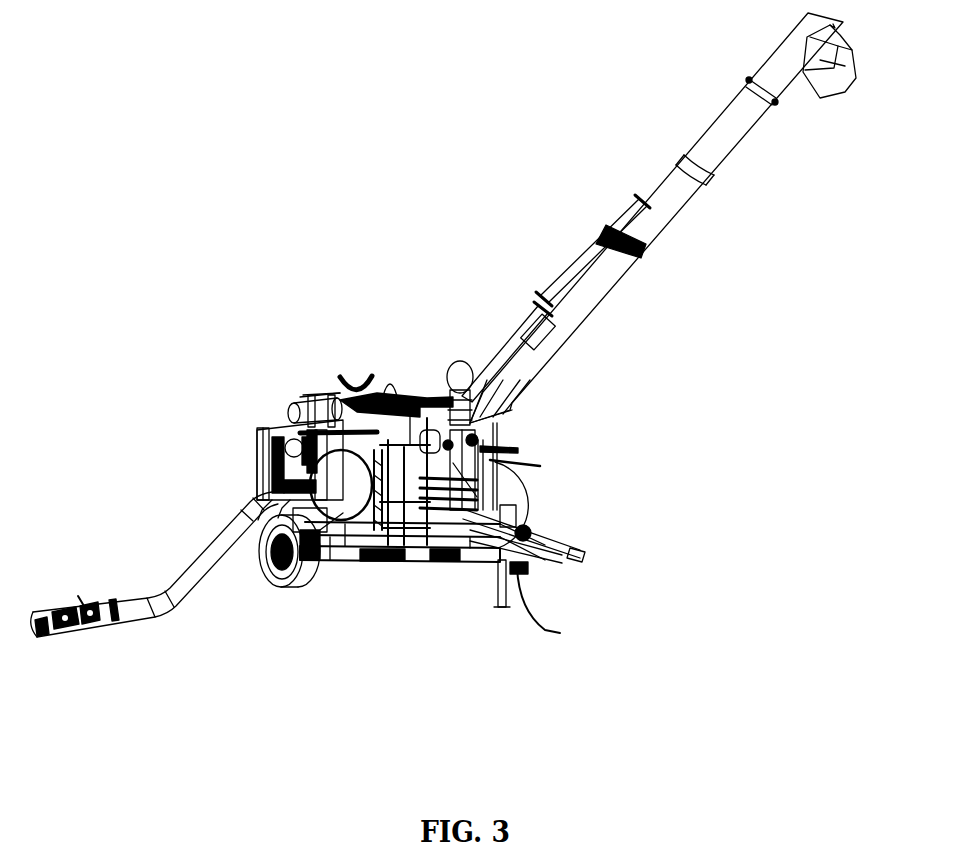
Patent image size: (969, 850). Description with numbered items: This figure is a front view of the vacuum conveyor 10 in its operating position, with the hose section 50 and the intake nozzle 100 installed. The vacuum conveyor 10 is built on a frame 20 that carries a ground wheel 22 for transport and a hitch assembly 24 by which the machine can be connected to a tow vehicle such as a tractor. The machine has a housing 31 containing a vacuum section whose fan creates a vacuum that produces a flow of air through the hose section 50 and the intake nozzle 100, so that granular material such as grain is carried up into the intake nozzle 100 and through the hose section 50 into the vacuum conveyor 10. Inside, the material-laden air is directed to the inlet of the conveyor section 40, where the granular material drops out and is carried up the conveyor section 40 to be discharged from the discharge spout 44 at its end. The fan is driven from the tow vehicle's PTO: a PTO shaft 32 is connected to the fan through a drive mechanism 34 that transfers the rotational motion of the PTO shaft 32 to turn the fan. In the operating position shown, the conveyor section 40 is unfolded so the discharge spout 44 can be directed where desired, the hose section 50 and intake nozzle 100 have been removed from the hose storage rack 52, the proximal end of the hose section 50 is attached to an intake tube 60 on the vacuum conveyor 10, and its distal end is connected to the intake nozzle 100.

The vacuum conveyor 10 is at (226, 152).
The frame 20 is at (438, 562).
The ground wheel 22 is at (310, 582).
The hitch assembly 24 is at (528, 570).
The housing 31 is at (427, 397).
The PTO shaft 32 is at (530, 517).
The drive mechanism 34 is at (480, 470).
The conveyor section 40 is at (670, 183).
The discharge spout 44 is at (837, 80).
The hose section 50 is at (207, 563).
The hose storage rack 52 is at (268, 431).
The intake tube 60 is at (290, 490).
The intake nozzle 100 is at (82, 603).